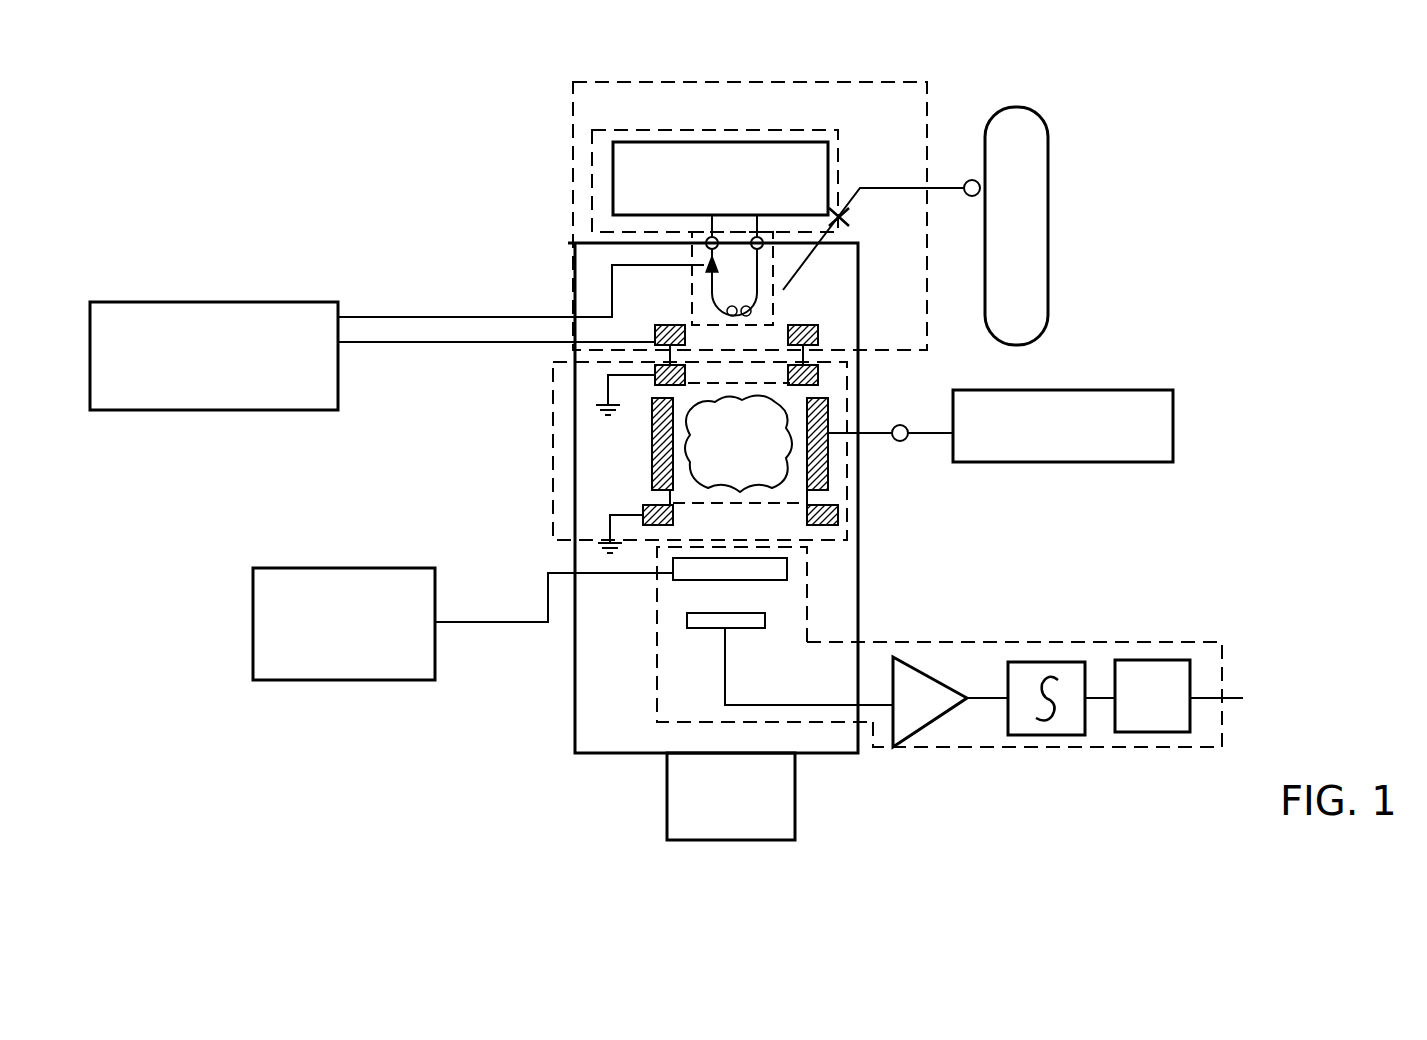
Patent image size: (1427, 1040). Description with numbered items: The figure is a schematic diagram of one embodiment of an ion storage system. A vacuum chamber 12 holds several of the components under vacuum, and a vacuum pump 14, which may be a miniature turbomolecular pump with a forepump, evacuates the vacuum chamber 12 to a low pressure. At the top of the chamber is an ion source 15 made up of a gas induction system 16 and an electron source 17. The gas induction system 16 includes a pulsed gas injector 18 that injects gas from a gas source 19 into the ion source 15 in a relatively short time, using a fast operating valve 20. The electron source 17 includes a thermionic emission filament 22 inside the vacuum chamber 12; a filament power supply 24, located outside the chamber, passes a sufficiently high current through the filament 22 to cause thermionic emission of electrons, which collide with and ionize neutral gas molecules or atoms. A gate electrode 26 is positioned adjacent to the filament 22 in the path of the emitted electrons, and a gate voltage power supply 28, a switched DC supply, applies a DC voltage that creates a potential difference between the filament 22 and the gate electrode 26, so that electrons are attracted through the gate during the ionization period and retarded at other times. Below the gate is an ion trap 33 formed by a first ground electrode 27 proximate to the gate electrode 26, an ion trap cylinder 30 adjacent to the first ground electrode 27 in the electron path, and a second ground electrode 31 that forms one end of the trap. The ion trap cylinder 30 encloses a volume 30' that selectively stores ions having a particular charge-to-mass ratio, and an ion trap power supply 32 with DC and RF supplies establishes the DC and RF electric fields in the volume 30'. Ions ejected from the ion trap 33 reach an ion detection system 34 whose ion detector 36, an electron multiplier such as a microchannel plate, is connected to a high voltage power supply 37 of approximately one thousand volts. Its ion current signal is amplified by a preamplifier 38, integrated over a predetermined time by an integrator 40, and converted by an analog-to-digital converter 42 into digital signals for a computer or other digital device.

The vacuum chamber 12 is at (577, 708).
The vacuum pump 14 is at (795, 812).
The ion source 15 is at (806, 82).
The gas induction system 16 is at (872, 188).
The electron source 17 is at (710, 130).
The pulsed gas injector 18 is at (805, 258).
The gas source 19 is at (985, 266).
The fast operating valve 20 is at (852, 216).
The thermionic emission filament 22 is at (705, 282).
The filament power supply 24 is at (636, 142).
The gate electrode 26 is at (818, 333).
The first ground electrode 27 is at (652, 368).
The gate voltage power supply 28 is at (232, 300).
The ion trap cylinder 30 is at (765, 444).
The volume 30' is at (798, 443).
The second ground electrode 31 is at (643, 506).
The ion trap power supply 32 is at (1095, 390).
The ion trap 33 is at (553, 480).
The ion detection system 34 is at (938, 642).
The ion detector 36 is at (668, 604).
The high voltage power supply 37 is at (393, 566).
The preamplifier 38 is at (914, 738).
The integrator 40 is at (1037, 735).
The analog-to-digital converter 42 is at (1146, 733).